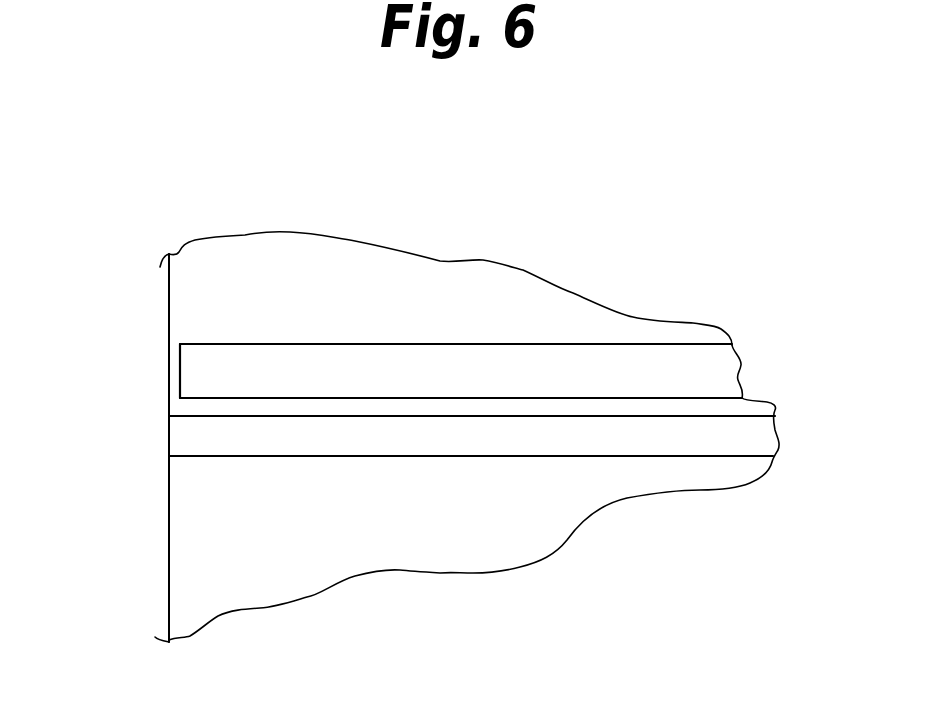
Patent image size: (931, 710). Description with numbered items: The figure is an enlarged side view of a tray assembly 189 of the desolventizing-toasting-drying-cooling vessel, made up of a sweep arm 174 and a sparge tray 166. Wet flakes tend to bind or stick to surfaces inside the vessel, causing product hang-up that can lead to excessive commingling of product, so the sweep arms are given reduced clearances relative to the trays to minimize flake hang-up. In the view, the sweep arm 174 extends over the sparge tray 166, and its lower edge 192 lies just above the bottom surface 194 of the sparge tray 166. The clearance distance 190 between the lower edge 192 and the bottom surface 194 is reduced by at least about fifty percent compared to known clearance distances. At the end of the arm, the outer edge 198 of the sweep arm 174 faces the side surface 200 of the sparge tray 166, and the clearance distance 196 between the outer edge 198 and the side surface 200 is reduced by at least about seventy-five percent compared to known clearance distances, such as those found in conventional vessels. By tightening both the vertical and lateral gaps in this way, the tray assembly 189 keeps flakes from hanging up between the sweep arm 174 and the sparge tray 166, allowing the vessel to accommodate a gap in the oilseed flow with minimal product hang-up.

The sparge tray 166 is at (637, 440).
The sweep arm 174 is at (545, 323).
The tray assembly 189 is at (729, 278).
The clearance distance 190 is at (334, 406).
The lower edge 192 is at (309, 397).
The bottom surface 194 is at (299, 416).
The clearance distance 196 is at (175, 353).
The outer edge 198 is at (182, 366).
The side surface 200 is at (168, 363).